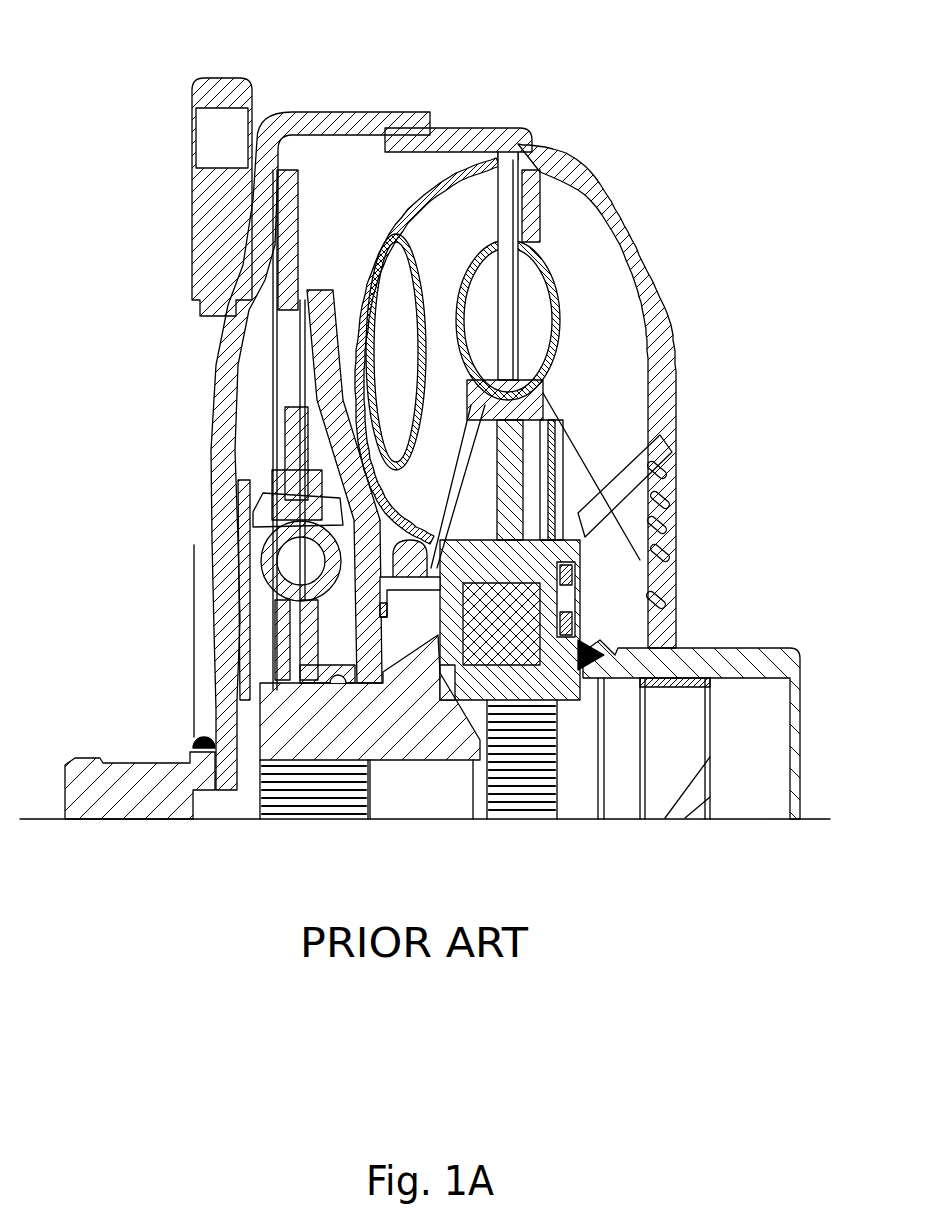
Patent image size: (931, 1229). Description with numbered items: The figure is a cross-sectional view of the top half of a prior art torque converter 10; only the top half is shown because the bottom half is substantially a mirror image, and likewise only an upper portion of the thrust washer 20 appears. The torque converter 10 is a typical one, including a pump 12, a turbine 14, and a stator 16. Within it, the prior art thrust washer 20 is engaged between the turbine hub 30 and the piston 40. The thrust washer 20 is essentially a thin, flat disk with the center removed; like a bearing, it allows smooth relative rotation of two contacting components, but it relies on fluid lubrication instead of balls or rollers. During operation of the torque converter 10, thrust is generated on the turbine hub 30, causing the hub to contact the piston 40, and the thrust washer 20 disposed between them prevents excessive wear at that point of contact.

The torque converter 10 is at (761, 78).
The pump 12 is at (633, 251).
The turbine 14 is at (488, 167).
The stator 16 is at (540, 400).
The thrust washer 20 is at (362, 643).
The turbine hub 30 is at (280, 713).
The piston 40 is at (367, 603).